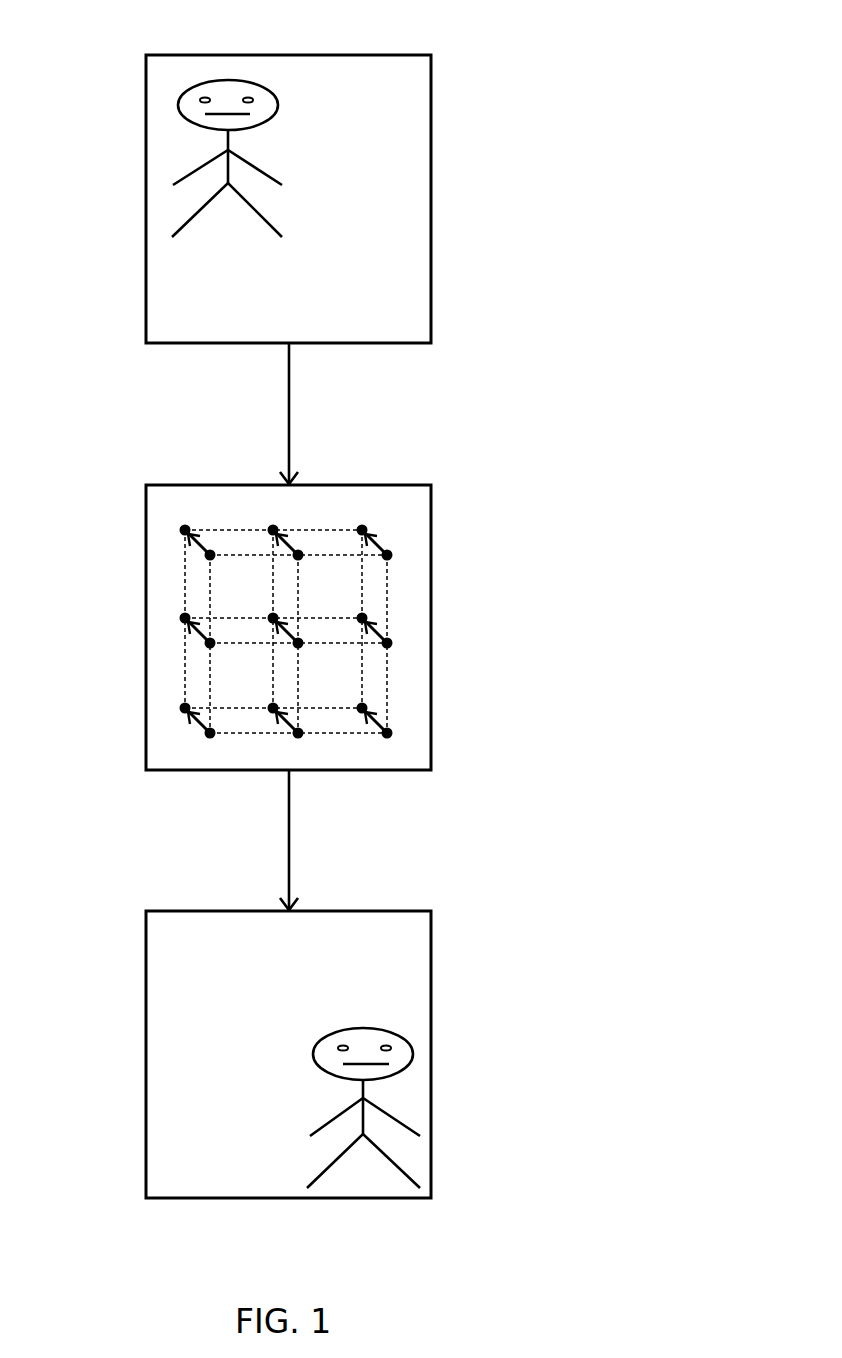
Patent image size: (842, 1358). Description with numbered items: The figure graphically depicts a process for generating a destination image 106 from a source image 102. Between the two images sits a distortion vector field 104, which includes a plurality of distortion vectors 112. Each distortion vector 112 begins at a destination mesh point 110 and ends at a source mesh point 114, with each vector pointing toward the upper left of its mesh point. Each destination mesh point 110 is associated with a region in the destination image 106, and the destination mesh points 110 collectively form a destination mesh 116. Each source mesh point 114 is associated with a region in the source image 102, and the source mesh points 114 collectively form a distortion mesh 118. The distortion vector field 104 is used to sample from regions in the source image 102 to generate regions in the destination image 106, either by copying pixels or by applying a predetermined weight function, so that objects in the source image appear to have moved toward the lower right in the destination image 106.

The input image 102 is at (430, 80).
The distortion vector field 104 is at (269, 635).
The destination image 106 is at (432, 930).
The destination mesh point 110 is at (211, 737).
The distortion vector 112 is at (203, 725).
The source mesh point 114 is at (185, 707).
The destination mesh 116 is at (387, 600).
The distortion mesh 118 is at (363, 682).